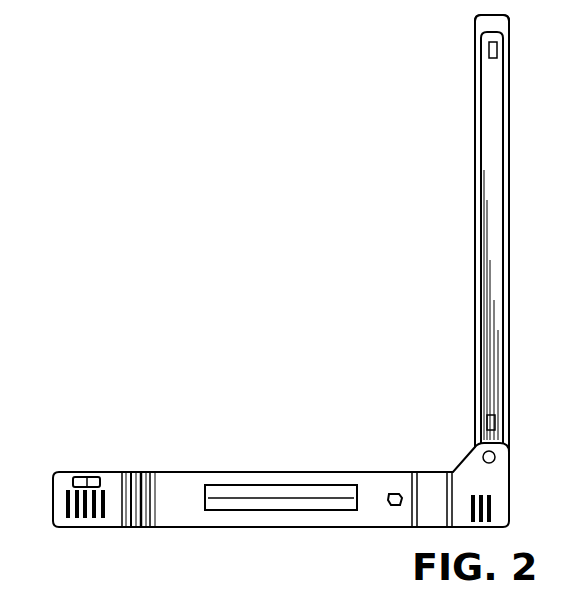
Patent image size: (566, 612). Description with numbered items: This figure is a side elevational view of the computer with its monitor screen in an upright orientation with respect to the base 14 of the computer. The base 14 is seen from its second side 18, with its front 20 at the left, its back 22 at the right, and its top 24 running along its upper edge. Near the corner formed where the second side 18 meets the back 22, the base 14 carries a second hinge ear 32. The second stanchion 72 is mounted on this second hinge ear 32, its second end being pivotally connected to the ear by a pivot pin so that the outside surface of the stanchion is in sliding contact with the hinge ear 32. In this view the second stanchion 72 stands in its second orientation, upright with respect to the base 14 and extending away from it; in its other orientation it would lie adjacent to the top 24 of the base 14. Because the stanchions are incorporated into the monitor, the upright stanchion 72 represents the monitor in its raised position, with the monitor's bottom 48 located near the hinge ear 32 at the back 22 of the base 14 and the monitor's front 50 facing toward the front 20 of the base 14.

The base 14 is at (222, 472).
The second side 18 is at (430, 487).
The front 20 is at (52, 485).
The back 22 is at (508, 495).
The top 24 is at (113, 471).
The second hinge ear 32 is at (477, 450).
The bottom 48 is at (488, 16).
The front 50 is at (481, 47).
The second stanchion 72 is at (489, 115).